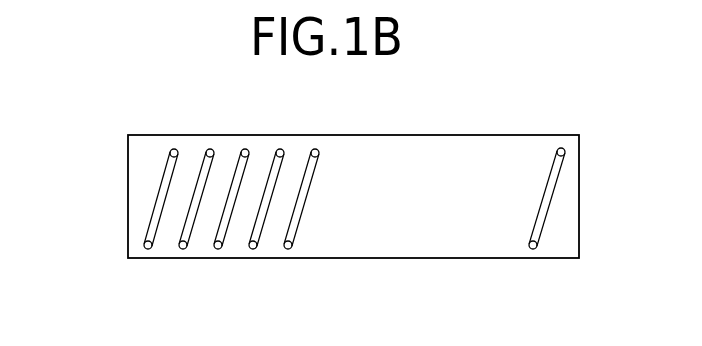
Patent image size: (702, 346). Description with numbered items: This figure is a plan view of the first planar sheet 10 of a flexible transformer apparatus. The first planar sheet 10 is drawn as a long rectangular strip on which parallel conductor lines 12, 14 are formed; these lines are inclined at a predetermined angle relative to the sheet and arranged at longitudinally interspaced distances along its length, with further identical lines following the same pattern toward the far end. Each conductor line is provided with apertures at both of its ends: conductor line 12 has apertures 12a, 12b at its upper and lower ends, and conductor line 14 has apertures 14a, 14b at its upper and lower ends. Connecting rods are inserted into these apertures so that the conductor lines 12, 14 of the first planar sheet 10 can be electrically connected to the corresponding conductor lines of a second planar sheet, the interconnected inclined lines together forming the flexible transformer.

The first planar sheet 10 is at (475, 143).
The parallel conductor line 12 is at (145, 197).
The aperture 12a is at (176, 149).
The aperture 12b is at (149, 249).
The parallel conductor line 14 is at (185, 197).
The aperture 14a is at (212, 149).
The aperture 14b is at (186, 248).